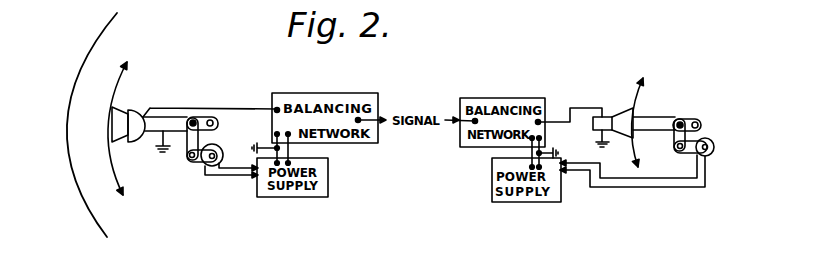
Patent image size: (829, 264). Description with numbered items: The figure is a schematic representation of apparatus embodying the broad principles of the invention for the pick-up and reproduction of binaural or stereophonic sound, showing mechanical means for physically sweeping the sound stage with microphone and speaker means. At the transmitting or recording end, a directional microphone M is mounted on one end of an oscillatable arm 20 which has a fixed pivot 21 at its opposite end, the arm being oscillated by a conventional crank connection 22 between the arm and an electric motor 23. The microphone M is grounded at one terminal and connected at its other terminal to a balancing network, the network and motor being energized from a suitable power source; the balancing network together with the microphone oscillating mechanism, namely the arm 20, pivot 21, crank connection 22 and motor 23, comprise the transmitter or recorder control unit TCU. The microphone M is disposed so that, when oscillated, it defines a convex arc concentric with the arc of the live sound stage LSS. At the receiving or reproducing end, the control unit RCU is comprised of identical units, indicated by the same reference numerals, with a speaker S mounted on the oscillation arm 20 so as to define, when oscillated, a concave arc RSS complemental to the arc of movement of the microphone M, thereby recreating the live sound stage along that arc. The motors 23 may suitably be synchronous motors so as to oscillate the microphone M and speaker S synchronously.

The oscillatable arm 20 is at (167, 118).
The fixed pivot 21 is at (217, 113).
The crank connection 22 is at (185, 147).
The electric motor 23 is at (220, 146).
The directional microphone M is at (120, 110).
The speaker S is at (625, 121).
The live sound stage LSS is at (93, 38).
The reproduced sound stage arc RSS is at (647, 85).
The transmitter or recorder control unit TCU is at (210, 81).
The receiving control unit RCU is at (662, 197).